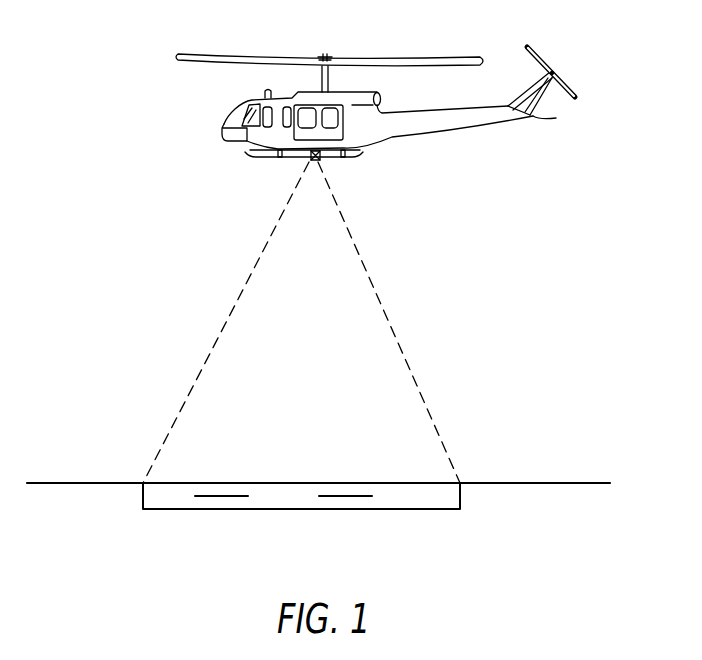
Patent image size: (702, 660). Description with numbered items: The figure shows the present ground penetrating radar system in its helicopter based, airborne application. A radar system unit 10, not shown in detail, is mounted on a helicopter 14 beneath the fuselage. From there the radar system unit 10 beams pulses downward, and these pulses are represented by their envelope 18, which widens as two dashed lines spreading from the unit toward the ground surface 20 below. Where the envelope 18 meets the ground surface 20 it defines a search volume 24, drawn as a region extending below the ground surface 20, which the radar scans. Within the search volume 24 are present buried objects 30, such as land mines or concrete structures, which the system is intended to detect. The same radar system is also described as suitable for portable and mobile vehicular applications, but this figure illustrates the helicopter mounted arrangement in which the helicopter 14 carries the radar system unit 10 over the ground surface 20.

The radar system unit 10 is at (320, 158).
The helicopter 14 is at (470, 124).
The envelope 18 is at (385, 312).
The ground surface 20 is at (575, 481).
The search volume 24 is at (438, 503).
The buried objects 30 is at (222, 498).